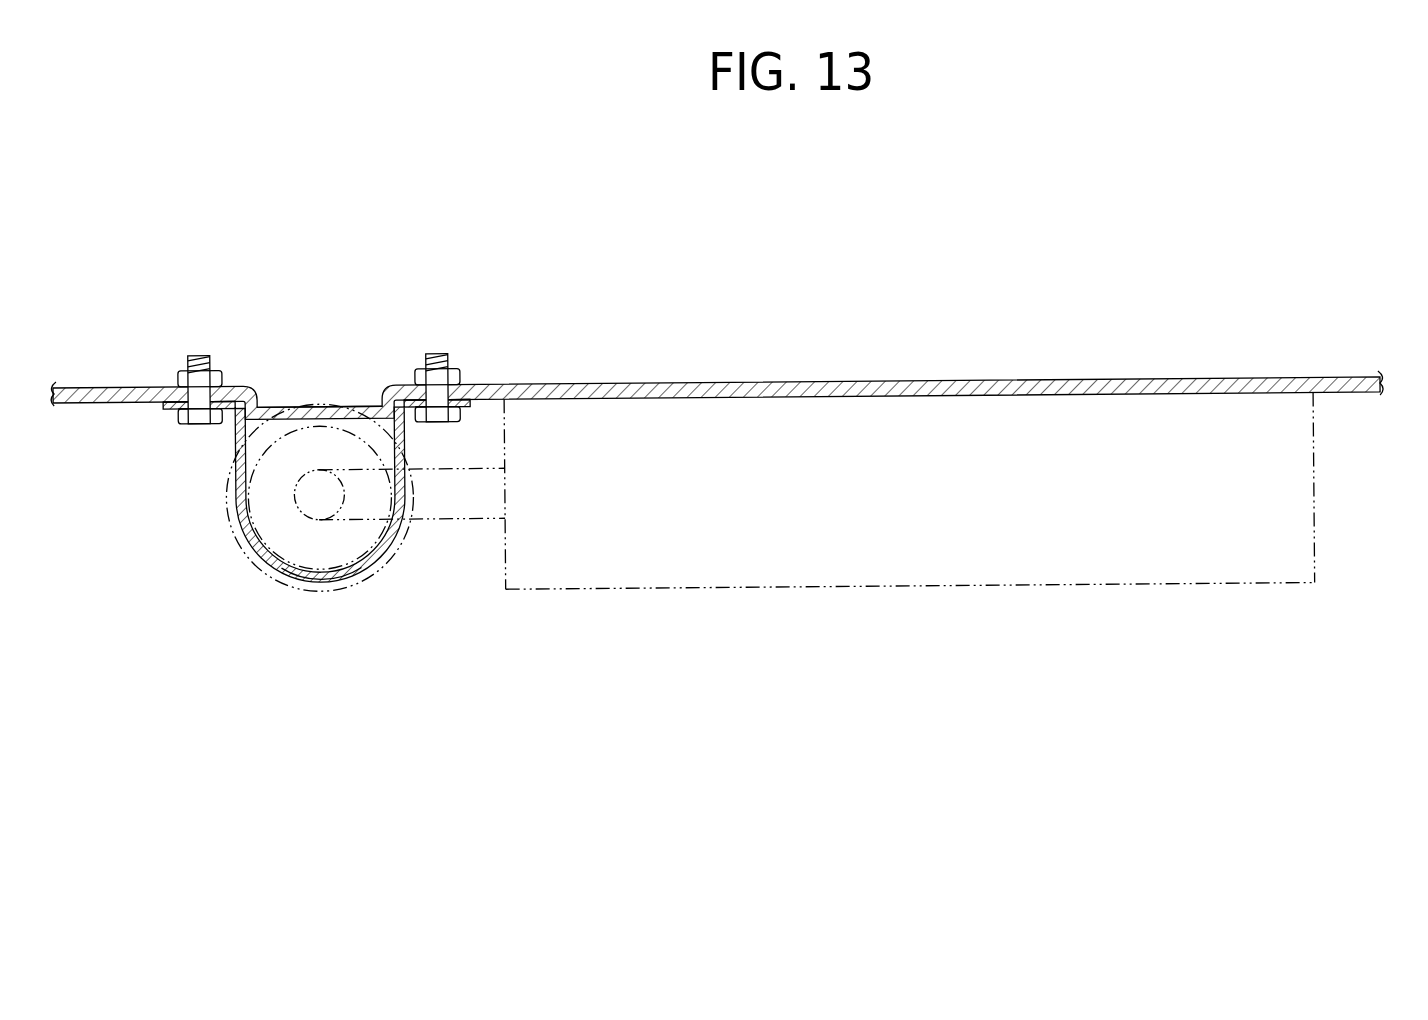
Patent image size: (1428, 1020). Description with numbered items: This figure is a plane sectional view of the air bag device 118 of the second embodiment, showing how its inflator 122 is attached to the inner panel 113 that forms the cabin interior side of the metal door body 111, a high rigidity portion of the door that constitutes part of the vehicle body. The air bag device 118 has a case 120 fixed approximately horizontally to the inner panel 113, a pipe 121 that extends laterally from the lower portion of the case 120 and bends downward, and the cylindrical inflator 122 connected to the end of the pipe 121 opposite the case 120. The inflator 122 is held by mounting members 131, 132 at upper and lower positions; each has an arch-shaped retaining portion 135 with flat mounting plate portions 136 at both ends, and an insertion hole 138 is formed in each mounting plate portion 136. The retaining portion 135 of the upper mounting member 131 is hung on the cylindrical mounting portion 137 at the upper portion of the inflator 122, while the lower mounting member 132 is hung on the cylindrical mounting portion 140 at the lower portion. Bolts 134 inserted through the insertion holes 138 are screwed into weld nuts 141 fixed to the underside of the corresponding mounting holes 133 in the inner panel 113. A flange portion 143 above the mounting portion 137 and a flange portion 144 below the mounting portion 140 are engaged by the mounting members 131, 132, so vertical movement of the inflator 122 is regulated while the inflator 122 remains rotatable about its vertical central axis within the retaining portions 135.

The door body 111 is at (1352, 425).
The inner panel 113 is at (1002, 396).
The air bag device 118 is at (1308, 618).
The case 120 is at (1193, 596).
The pipe 121 is at (416, 527).
The inflator 122 is at (367, 409).
The mounting member 131 is at (254, 492).
The mounting member 132 is at (224, 520).
The mounting hole 133 is at (203, 370).
The bolt 134 is at (210, 428).
The retaining portion 135 is at (331, 586).
The mounting plate portion 136 is at (170, 406).
The mounting portion 137 is at (372, 389).
The insertion hole 138 is at (200, 412).
The mounting portion 140 is at (260, 410).
The weld nut 141 is at (179, 373).
The flange portion 143 is at (238, 533).
The flange portion 144 is at (256, 574).